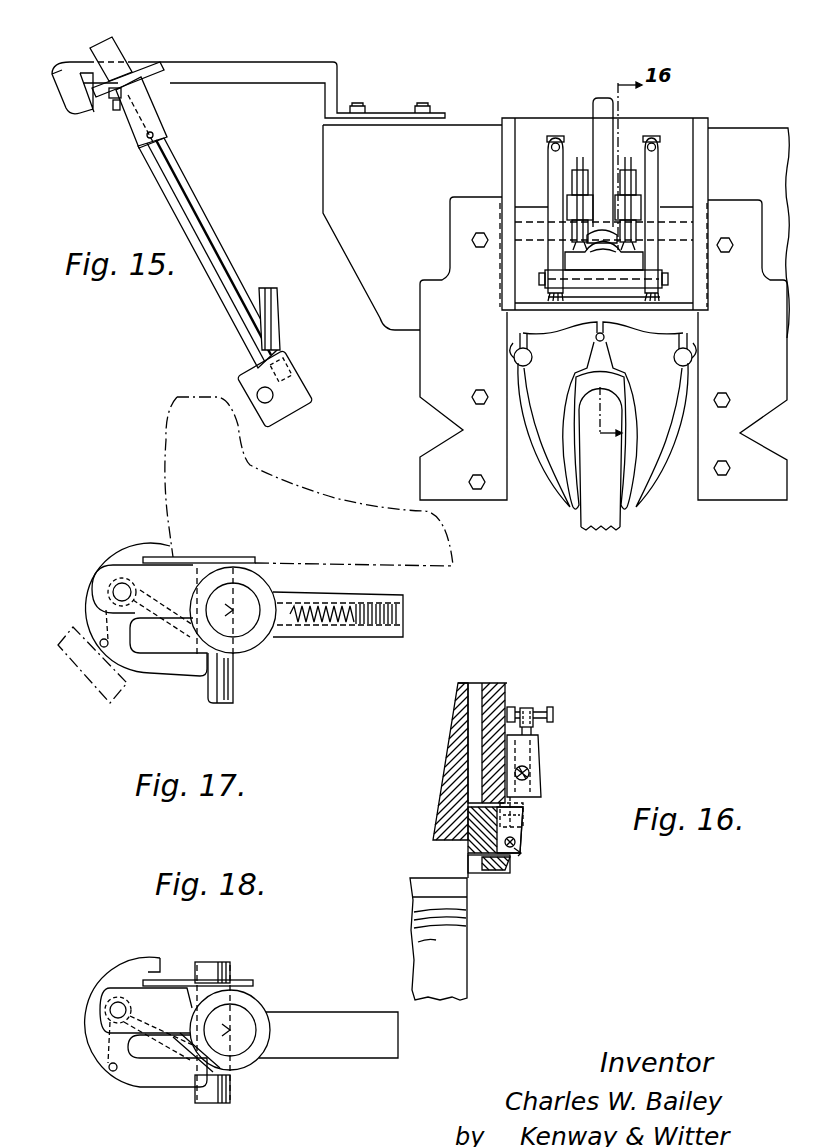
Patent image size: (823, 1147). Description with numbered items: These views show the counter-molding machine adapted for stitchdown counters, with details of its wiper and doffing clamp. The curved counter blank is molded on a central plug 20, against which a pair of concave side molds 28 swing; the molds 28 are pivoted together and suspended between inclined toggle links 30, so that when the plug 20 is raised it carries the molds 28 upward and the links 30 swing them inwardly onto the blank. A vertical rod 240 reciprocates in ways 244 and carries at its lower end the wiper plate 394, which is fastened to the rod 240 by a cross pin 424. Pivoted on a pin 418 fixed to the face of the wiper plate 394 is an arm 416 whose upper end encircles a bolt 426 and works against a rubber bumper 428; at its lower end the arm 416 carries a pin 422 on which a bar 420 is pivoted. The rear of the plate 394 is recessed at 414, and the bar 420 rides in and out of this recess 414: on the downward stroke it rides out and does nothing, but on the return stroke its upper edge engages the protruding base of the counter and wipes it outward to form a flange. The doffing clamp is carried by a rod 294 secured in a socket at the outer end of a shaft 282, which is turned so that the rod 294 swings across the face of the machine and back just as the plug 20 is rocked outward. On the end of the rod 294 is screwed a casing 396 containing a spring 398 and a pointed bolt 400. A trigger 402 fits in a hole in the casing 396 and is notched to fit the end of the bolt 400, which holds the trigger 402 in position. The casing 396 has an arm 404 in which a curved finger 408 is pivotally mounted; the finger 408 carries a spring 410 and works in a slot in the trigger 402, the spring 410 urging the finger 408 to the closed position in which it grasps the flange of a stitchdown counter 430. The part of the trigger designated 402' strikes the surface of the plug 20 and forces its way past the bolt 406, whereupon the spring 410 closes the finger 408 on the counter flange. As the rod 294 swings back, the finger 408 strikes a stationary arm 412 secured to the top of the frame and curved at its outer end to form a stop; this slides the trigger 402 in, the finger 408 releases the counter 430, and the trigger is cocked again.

In FIG. 15, the plug 20 is at (601, 530).
In FIG. 16, the plug 20 is at (452, 977).
In FIG. 15, the concave side molds 28 is at (553, 483).
In FIG. 15, the inclined toggle links 30 is at (509, 345).
In FIG. 15, the vertical rod 240 is at (595, 105).
In FIG. 15, the ways 244 is at (433, 285).
In FIG. 15, the shaft 282 is at (277, 296).
In FIG. 15, the rod 294 is at (201, 208).
In FIG. 15, the wiper plate 394 is at (522, 122).
In FIG. 17, the wiper plate 394 is at (405, 610).
In FIG. 16, the wiper plate 394 is at (505, 700).
In FIG. 17, the casing 396 is at (403, 637).
In FIG. 18, the casing 396 is at (367, 1058).
In FIG. 17, the spring 398 is at (348, 622).
In FIG. 17, the pointed bolt 400 is at (283, 603).
In FIG. 15, the trigger 402 is at (152, 67).
In FIG. 17, the trigger 402 is at (242, 697).
In FIG. 18, the trigger 402 is at (238, 1096).
In FIG. 18, the trigger part 402' is at (241, 957).
In FIG. 17, the arm 404 is at (153, 575).
In FIG. 18, the arm 404 is at (170, 995).
In FIG. 15, the bolt 406 is at (110, 42).
In FIG. 18, the bolt 406 is at (253, 983).
In FIG. 15, the curved finger 408 is at (146, 90).
In FIG. 17, the curved finger 408 is at (158, 668).
In FIG. 18, the curved finger 408 is at (83, 1043).
In FIG. 17, the spring 410 is at (100, 618).
In FIG. 18, the spring 410 is at (177, 1047).
In FIG. 15, the stationary arm 412 is at (284, 62).
In FIG. 17, the stationary arm 412 is at (88, 686).
In FIG. 16, the recess 414 is at (476, 716).
In FIG. 15, the arm 416 is at (658, 172).
In FIG. 16, the arm 416 is at (540, 728).
In FIG. 15, the pin 418 is at (688, 236).
In FIG. 16, the pin 418 is at (525, 805).
In FIG. 15, the bar 420 is at (607, 262).
In FIG. 16, the bar 420 is at (470, 848).
In FIG. 15, the pin 422 is at (664, 283).
In FIG. 16, the pin 422 is at (518, 854).
In FIG. 15, the cross pin 424 is at (641, 205).
In FIG. 16, the cross pin 424 is at (538, 773).
In FIG. 15, the bolt 426 is at (652, 138).
In FIG. 16, the bolt 426 is at (556, 713).
In FIG. 16, the rubber bumper 428 is at (512, 706).
In FIG. 15, the stitchdown counter 430 is at (163, 445).